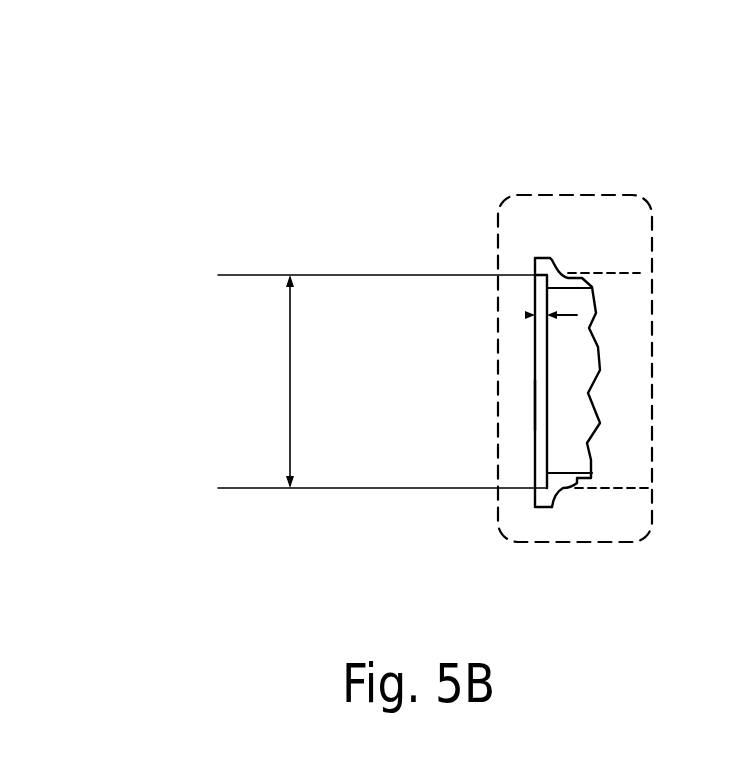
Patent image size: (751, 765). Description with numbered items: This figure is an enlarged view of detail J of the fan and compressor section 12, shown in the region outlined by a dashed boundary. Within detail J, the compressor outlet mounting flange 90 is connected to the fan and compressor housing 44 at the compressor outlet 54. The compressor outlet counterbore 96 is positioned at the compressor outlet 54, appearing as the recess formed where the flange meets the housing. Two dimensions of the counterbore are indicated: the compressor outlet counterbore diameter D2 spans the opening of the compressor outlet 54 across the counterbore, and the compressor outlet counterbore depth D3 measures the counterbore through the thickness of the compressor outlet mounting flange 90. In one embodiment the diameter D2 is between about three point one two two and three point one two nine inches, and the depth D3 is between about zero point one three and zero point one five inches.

The fan and compressor section 12 is at (387, 136).
The fan and compressor housing 44 is at (600, 273).
The compressor outlet 54 is at (432, 448).
The compressor outlet mounting flange 90 is at (535, 258).
The compressor outlet counterbore 96 is at (507, 406).
The detail J is at (648, 532).
The compressor outlet counterbore diameter D2 is at (290, 383).
The compressor outlet counterbore depth D3 is at (527, 315).